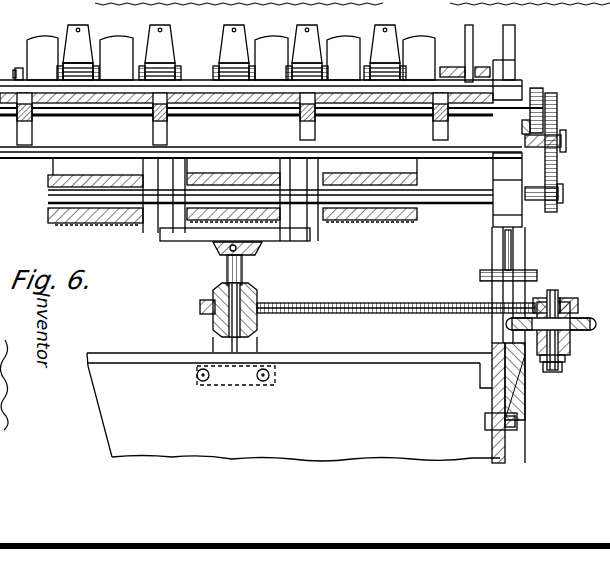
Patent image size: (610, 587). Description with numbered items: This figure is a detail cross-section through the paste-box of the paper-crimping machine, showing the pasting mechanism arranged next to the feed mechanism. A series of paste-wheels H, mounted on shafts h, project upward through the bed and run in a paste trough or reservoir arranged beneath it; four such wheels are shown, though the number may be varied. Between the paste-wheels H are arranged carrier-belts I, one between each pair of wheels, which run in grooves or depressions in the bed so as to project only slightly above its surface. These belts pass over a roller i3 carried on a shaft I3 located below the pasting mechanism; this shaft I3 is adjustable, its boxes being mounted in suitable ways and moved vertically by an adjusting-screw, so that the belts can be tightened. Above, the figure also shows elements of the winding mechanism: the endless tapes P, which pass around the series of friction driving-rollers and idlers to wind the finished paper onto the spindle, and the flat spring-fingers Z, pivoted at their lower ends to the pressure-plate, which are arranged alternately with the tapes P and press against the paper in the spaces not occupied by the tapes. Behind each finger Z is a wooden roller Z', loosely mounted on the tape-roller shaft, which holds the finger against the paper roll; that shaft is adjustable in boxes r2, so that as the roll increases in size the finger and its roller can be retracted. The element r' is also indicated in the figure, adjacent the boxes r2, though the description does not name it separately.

The tapes P is at (22, 45).
The flat spring-fingers Z is at (209, 52).
The wooden roller Z' is at (94, 48).
The paste-wheels H is at (153, 128).
The shafts h is at (376, 116).
The post r' is at (493, 62).
The boxes r2 is at (492, 72).
The roller i3 is at (67, 230).
The carrier-belts I is at (295, 308).
The shaft I3 is at (454, 192).